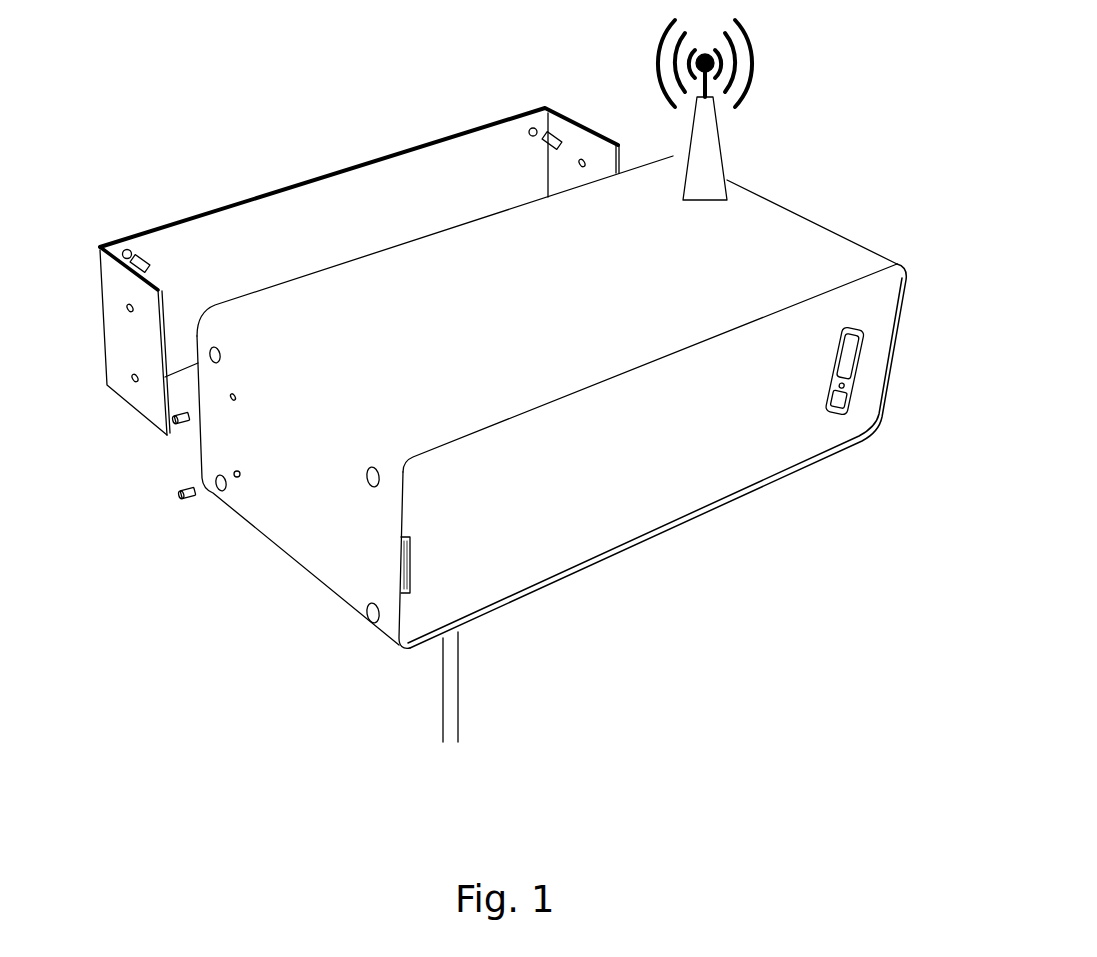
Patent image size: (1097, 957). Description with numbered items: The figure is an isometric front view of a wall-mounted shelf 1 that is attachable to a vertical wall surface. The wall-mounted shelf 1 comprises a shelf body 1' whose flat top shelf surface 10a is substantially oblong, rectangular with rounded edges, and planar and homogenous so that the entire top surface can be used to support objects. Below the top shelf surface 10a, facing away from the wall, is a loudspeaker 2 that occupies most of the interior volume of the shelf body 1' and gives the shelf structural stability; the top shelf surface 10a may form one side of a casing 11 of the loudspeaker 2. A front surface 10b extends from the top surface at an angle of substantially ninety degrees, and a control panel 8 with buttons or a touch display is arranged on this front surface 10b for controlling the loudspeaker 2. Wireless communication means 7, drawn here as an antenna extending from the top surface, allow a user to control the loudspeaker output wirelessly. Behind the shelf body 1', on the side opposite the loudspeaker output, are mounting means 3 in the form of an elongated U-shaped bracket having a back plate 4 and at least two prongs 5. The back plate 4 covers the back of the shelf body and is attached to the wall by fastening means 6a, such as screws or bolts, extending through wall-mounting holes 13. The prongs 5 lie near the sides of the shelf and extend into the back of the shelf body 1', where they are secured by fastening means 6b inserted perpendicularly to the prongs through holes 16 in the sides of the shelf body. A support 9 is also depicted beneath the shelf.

The wall-mounted shelf 1 is at (812, 143).
The shelf body 1' is at (568, 561).
The loudspeaker 2 is at (703, 503).
The mounting means 3 is at (140, 208).
The back plate 4 is at (278, 200).
The prongs 5 is at (120, 375).
The fastening means 6a is at (145, 257).
The fastening means 6b is at (186, 500).
The wireless communication means 7 is at (723, 170).
The control panel 8 is at (847, 397).
The pole / support 9 is at (455, 678).
The top shelf surface 10a is at (808, 245).
The front surface 10b is at (765, 457).
The casing 11 is at (315, 546).
The wall-mounting holes 13 is at (120, 250).
The holes 16 is at (237, 478).